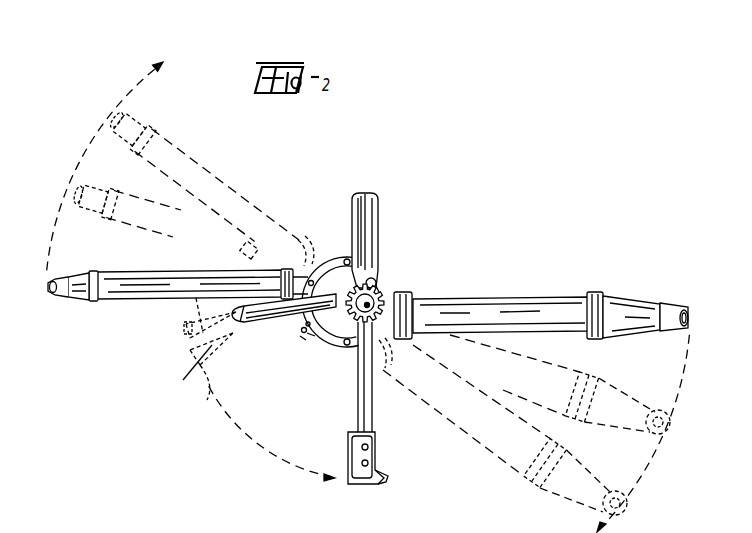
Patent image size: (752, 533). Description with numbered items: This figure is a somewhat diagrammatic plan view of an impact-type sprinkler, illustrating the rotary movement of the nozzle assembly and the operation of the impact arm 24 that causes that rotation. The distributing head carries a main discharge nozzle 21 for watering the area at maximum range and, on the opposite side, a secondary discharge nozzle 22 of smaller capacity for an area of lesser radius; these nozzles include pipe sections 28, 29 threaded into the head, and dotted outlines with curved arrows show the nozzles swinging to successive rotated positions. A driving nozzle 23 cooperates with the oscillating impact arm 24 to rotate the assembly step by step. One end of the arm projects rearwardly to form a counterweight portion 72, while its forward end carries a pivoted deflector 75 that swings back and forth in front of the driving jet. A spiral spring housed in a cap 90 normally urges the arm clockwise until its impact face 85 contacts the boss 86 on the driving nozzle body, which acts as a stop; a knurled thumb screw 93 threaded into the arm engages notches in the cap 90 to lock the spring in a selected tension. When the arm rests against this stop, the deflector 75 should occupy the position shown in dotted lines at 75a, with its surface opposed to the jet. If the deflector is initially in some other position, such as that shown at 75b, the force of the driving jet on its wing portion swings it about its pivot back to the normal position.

The main discharge nozzle 21 is at (655, 305).
The secondary discharge nozzle 22 is at (118, 117).
The driving nozzle 23 is at (243, 322).
The impact arm 24 is at (373, 418).
The pipe section 28 is at (548, 307).
The pipe section 29 is at (192, 164).
The counterweight portion 72 is at (380, 206).
The deflector 75 is at (378, 487).
The deflector position 75a is at (200, 330).
The deflector position 75b is at (207, 390).
The impact face 85 is at (348, 343).
The boss 86 is at (338, 260).
The cap 90 is at (388, 298).
The thumb screw 93 is at (376, 284).